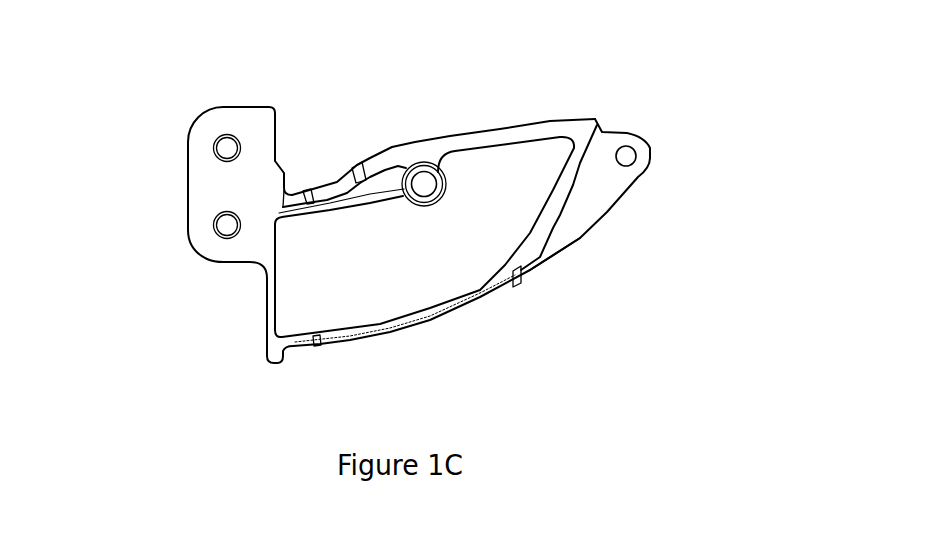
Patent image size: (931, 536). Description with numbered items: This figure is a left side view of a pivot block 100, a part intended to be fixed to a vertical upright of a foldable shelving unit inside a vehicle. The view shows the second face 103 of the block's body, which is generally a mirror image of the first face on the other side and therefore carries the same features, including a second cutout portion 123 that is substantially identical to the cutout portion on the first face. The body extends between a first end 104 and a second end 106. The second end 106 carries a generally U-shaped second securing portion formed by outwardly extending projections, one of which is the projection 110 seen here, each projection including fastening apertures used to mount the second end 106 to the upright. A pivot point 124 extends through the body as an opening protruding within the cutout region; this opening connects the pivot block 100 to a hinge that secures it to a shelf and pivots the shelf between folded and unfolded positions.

The pivot block 100 is at (402, 209).
The outwardly extending projection 110 is at (194, 133).
The second end 106 is at (162, 252).
The second face 103 is at (398, 263).
The pivot point 124 is at (450, 128).
The second cutout portion 123 is at (536, 234).
The first end 104 is at (651, 194).